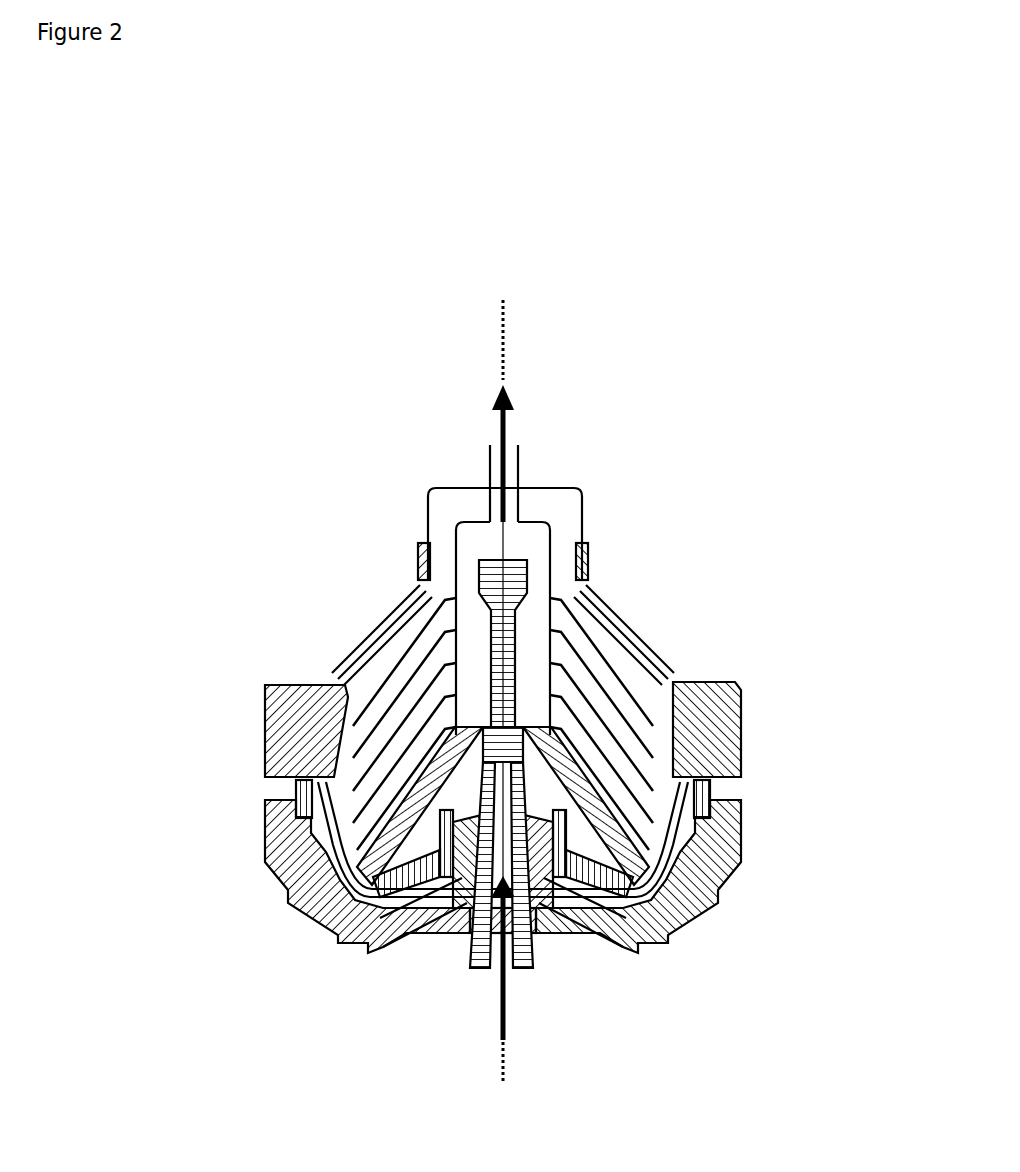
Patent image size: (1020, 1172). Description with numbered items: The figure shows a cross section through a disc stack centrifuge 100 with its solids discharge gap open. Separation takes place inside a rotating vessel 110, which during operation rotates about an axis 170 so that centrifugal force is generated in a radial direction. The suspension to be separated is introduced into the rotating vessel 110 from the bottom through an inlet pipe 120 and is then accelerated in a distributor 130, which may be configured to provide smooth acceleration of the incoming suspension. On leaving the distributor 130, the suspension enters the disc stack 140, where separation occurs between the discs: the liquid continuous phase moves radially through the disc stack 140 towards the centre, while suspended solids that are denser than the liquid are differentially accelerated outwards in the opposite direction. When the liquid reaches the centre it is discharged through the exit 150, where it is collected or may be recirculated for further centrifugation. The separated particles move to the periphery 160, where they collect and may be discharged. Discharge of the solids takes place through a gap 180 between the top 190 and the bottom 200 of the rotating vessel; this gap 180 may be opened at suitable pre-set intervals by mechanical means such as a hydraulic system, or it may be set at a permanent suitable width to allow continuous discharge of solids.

The disc stack centrifuge 100 is at (710, 592).
The rotating vessel 110 is at (258, 700).
The inlet pipe 120 is at (486, 932).
The distributor 130 is at (546, 802).
The disc stack 140 is at (396, 662).
The exit 150 is at (492, 513).
The periphery 160 is at (663, 777).
The axis 170 is at (508, 345).
The gap 180 is at (733, 789).
The top of the rotating vessel 190 is at (746, 750).
The bottom of the rotating vessel 200 is at (750, 870).